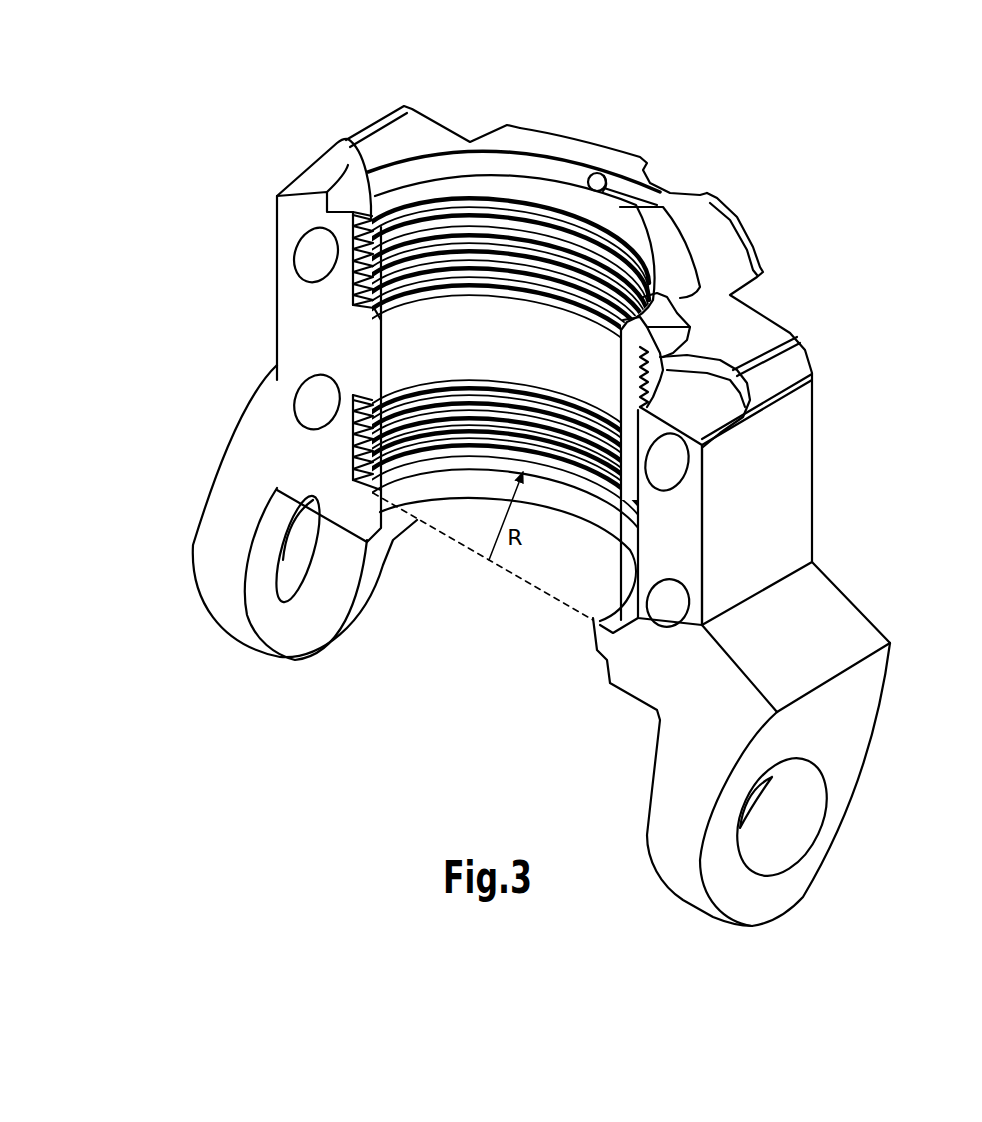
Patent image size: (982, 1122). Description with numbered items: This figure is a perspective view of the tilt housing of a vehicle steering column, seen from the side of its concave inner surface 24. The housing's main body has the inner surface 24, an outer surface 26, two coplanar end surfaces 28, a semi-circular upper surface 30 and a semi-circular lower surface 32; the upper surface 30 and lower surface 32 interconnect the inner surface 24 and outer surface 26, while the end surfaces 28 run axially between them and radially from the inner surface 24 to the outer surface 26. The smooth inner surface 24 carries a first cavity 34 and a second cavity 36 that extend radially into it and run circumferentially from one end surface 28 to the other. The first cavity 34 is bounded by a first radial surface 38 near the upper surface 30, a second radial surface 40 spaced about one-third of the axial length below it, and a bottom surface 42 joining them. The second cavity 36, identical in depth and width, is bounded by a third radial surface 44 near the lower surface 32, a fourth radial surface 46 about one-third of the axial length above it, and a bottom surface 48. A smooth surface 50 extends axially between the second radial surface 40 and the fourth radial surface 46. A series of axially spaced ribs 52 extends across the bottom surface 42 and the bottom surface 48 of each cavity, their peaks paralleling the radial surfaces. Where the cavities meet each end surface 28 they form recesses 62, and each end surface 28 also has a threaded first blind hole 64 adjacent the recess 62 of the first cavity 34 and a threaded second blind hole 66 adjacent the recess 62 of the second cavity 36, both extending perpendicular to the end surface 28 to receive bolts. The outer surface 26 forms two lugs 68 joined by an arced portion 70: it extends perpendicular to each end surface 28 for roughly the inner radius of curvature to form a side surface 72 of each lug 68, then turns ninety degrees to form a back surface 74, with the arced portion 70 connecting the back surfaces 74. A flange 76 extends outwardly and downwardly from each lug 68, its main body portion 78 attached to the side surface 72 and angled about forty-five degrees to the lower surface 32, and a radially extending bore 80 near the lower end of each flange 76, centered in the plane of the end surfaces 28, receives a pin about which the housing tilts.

The inner surface 24 is at (470, 483).
The outer surface 26 is at (750, 237).
The end surfaces 28 is at (330, 330).
The upper surface 30 is at (663, 243).
The lower surface 32 is at (580, 520).
The first cavity 34 is at (373, 220).
The second cavity 36 is at (353, 440).
The first radial surface 38 is at (370, 205).
The second radial surface 40 is at (340, 308).
The bottom surface 42 is at (533, 235).
The third radial surface 44 is at (373, 487).
The fourth radial surface 46 is at (297, 428).
The bottom surface 48 is at (427, 445).
The smooth surface 50 is at (503, 361).
The ribs 52 is at (353, 273).
The recesses 62 is at (347, 209).
The first blind hole 64 is at (672, 466).
The second blind hole 66 is at (672, 606).
The lugs 68 is at (402, 126).
The arced portion 70 is at (613, 140).
The side surface 72 is at (727, 523).
The back surface 74 is at (447, 115).
The flange 76 is at (202, 605).
The main body portion 78 is at (830, 730).
The bore 80 is at (314, 572).